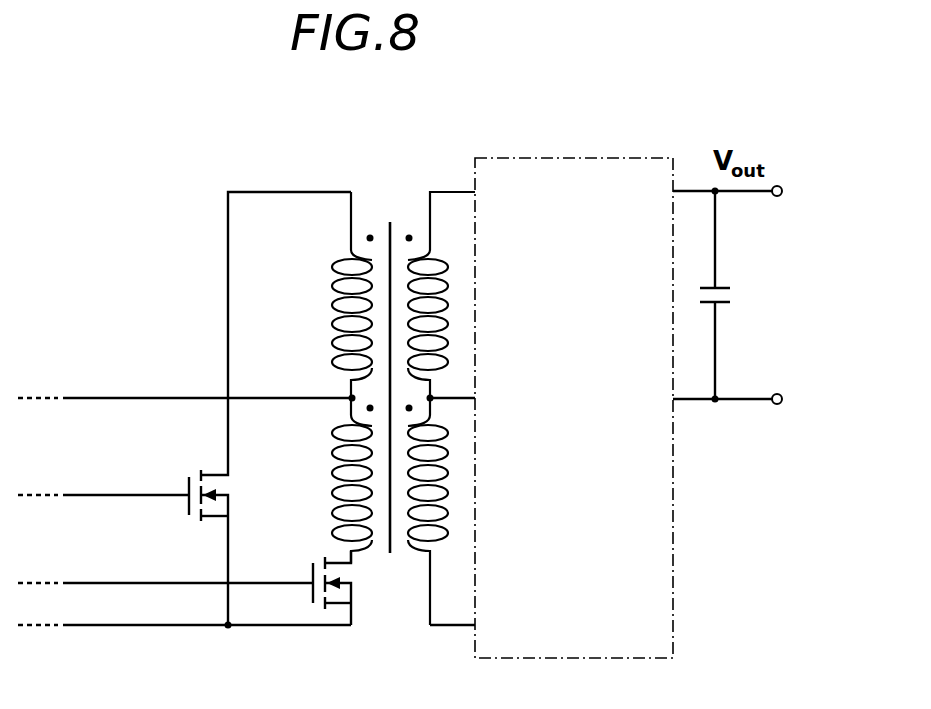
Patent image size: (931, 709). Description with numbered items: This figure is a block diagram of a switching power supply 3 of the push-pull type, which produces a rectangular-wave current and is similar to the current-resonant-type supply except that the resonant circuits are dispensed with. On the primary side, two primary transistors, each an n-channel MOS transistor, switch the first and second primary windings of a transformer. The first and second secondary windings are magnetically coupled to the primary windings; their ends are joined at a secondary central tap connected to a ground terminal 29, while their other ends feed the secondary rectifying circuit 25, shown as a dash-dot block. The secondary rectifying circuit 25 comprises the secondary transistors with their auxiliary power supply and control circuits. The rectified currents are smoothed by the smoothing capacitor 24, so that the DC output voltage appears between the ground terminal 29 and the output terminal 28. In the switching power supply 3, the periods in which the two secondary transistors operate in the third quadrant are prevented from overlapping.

The switching power supply 3 is at (107, 163).
The secondary rectifying circuit 25 is at (617, 158).
The smoothing capacitor 24 is at (733, 294).
The output terminal 28 is at (785, 190).
The ground terminal 29 is at (782, 405).